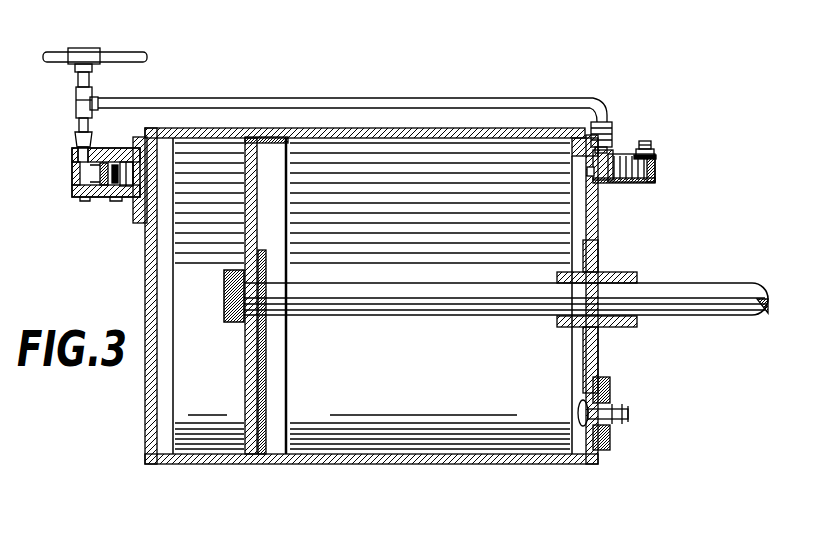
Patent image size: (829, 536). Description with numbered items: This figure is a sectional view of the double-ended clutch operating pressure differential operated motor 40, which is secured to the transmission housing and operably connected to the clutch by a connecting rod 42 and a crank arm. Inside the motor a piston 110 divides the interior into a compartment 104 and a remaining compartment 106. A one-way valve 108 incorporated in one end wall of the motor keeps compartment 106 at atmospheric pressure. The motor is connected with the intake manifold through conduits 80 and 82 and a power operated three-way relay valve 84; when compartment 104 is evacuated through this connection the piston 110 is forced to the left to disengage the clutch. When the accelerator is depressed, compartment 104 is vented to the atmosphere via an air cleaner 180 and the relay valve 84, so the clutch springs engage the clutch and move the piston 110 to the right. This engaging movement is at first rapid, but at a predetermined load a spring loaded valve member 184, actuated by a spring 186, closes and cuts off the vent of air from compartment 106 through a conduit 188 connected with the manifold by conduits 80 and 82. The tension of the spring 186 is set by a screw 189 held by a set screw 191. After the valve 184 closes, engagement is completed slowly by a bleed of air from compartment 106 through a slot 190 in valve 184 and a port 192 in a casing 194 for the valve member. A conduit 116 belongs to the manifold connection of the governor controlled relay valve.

The clutch operating pressure differential operated motor 40 is at (455, 97).
The connecting rod 42 is at (677, 297).
The conduit 80 is at (127, 53).
The conduit 82 is at (80, 82).
The three-way relay valve 84 is at (100, 200).
The compartment 104 is at (190, 393).
The compartment 106 is at (450, 425).
The one-way valve 108 is at (580, 412).
The piston 110 is at (260, 373).
The conduit 116 is at (55, 50).
The air cleaner 180 is at (392, 529).
The spring loaded valve member 184 is at (615, 158).
The spring 186 is at (618, 182).
The conduit 188 is at (332, 104).
The screw 189 is at (655, 170).
The slot 190 is at (600, 181).
The set screw 191 is at (650, 149).
The port 192 is at (645, 141).
The casing 194 is at (656, 157).